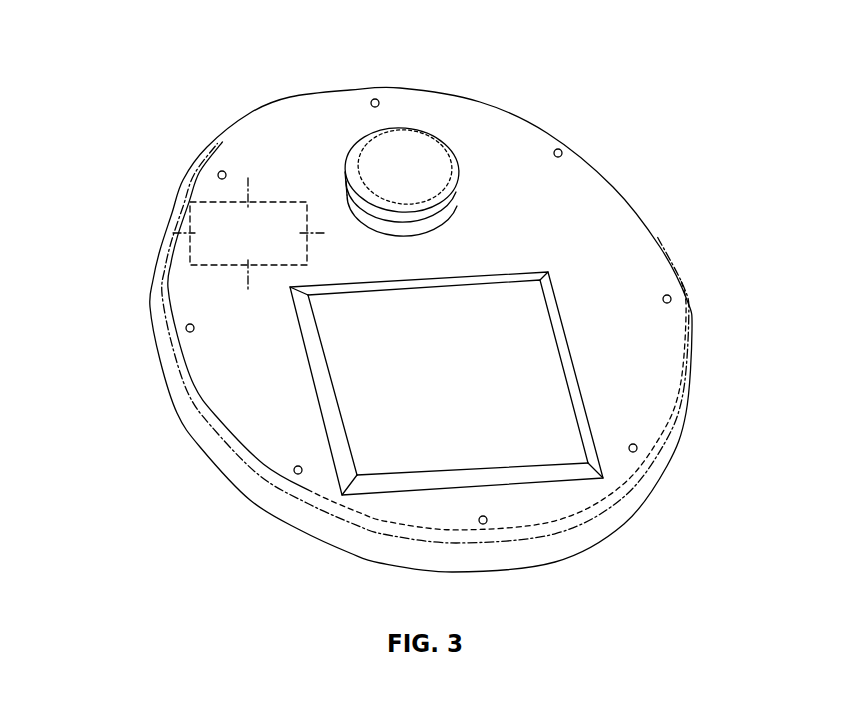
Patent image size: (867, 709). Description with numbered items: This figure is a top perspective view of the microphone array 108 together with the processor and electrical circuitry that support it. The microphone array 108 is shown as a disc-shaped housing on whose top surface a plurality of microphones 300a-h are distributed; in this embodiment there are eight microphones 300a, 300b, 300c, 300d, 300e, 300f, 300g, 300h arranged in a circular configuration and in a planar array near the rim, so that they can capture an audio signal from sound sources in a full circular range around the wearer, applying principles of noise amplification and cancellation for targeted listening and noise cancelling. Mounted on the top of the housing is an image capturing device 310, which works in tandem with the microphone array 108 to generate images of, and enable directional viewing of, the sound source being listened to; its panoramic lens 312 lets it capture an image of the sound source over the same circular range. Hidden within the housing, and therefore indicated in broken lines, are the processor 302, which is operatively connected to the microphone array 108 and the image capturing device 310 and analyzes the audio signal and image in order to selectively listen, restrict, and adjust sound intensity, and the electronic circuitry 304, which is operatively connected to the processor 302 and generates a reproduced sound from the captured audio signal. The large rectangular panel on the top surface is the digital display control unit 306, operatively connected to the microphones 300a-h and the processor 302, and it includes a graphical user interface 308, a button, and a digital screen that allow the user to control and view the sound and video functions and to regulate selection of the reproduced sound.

The microphone array 108 is at (680, 61).
The microphone 300a is at (218, 172).
The microphone 300b is at (372, 99).
The microphone 300c is at (562, 150).
The microphone 300d is at (670, 296).
The microphone 300e is at (637, 451).
The microphone 300f is at (487, 521).
The microphone 300g is at (294, 471).
The microphone 300h is at (187, 325).
The processor 302 is at (184, 257).
The electronic circuitry 304 is at (216, 223).
The digital display control unit 306 is at (408, 478).
The graphical user interface 308 is at (525, 367).
The image capturing device 310 is at (394, 113).
The panoramic lens 312 is at (430, 165).